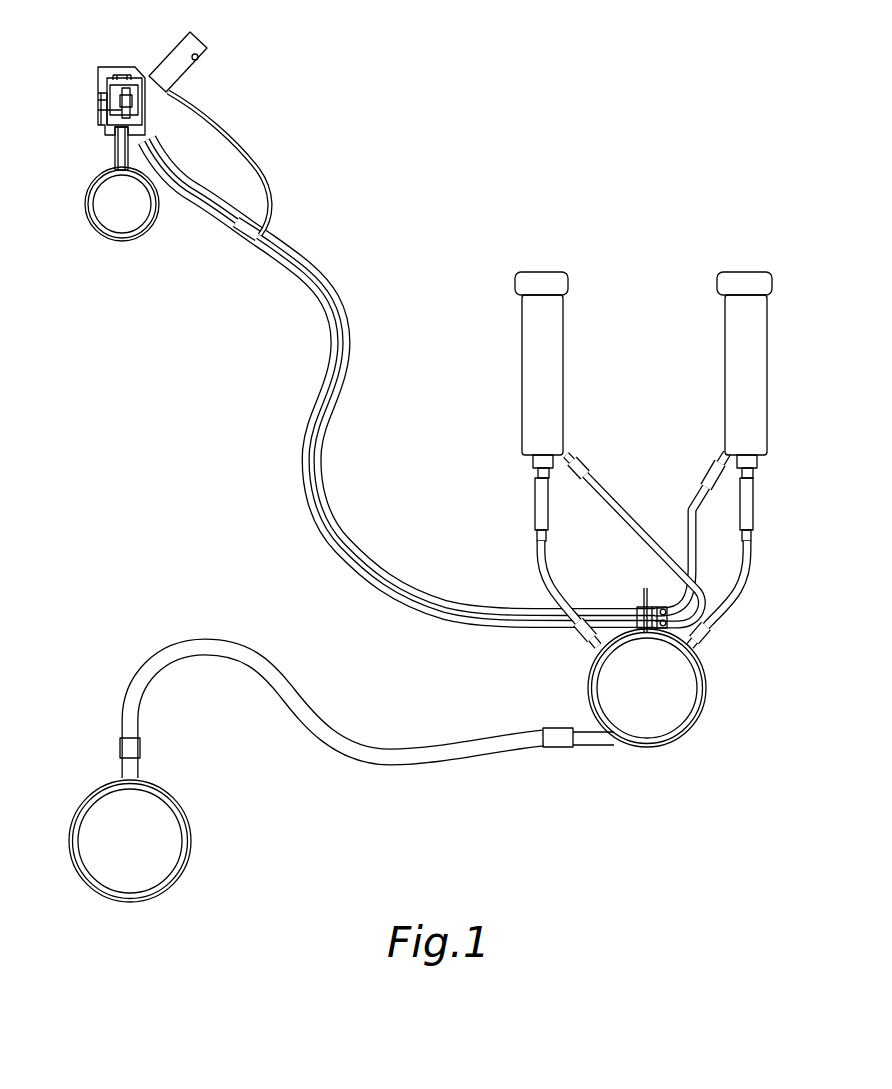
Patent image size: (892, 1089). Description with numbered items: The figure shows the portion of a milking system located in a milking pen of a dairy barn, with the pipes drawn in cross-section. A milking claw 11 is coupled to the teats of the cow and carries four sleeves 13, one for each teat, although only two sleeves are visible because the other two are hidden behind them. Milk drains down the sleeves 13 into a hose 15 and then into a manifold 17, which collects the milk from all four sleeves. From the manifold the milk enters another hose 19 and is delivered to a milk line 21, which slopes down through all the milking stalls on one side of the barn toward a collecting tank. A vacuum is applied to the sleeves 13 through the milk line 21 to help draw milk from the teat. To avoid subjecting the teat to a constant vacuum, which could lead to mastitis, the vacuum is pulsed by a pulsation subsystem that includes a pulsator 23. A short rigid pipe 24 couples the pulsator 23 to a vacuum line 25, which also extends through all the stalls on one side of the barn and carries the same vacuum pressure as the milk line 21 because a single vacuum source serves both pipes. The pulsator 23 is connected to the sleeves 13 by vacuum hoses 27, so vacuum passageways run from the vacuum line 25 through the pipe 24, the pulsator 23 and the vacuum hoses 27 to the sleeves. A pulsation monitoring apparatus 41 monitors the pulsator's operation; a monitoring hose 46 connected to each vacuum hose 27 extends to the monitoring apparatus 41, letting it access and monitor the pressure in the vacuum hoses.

The milking claw 11 is at (563, 356).
The sleeve 13 is at (563, 413).
The hose 15 is at (540, 558).
The manifold 17 is at (657, 720).
The hose 19 is at (433, 742).
The milk line 21 is at (184, 808).
The pulsator 23 is at (112, 100).
The short rigid pipe 24 is at (114, 153).
The vacuum line 25 is at (88, 220).
The vacuum hose 27 is at (347, 303).
The pulsation monitoring apparatus 41 is at (202, 35).
The monitoring hose 46 is at (232, 137).